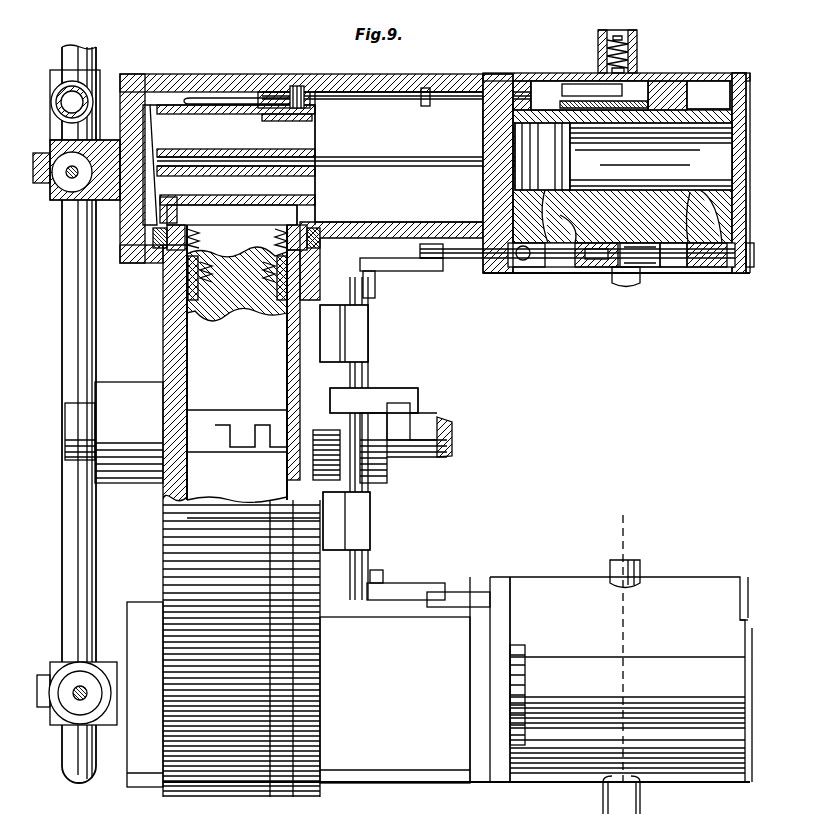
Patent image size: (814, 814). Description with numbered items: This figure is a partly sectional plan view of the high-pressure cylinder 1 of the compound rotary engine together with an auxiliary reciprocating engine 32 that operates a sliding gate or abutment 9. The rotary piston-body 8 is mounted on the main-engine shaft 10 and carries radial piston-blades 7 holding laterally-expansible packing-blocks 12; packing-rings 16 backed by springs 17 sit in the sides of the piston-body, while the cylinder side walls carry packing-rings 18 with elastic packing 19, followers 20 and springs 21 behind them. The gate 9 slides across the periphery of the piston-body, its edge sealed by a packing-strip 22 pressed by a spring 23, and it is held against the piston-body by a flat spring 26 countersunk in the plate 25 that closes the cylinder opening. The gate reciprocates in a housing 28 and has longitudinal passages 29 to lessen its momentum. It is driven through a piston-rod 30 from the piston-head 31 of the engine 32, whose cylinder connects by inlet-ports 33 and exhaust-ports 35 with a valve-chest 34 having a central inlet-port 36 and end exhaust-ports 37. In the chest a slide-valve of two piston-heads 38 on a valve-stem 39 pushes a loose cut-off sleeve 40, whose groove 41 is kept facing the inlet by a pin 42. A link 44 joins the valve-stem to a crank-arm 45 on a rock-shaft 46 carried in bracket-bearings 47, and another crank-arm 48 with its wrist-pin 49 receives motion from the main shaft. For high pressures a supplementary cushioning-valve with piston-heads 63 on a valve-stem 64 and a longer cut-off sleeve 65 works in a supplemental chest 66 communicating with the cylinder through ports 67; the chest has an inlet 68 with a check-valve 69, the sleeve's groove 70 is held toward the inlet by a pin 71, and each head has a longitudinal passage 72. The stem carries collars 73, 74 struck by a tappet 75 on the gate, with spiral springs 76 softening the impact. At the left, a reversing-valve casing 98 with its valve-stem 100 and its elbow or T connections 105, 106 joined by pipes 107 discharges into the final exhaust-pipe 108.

The high-pressure cylinder 1 is at (168, 562).
The radial piston-blade 7 is at (236, 410).
The rotary piston-body 8 is at (237, 362).
The sliding gate or abutment 9 is at (160, 210).
The main-engine shaft 10 is at (455, 455).
The packing-blocks 12 is at (237, 431).
The packing-rings 16 is at (193, 304).
The springs 17 is at (237, 284).
The packing-rings 18 is at (237, 237).
The elastic packing 19 is at (312, 252).
The followers 20 is at (136, 266).
The springs 21 is at (153, 238).
The packing-strip 22 is at (262, 215).
The spring 23 is at (232, 215).
The plate 25 is at (176, 74).
The flat spring 26 is at (205, 98).
The housing 28 is at (412, 437).
The longitudinal passages 29 is at (232, 165).
The piston-rod 30 is at (374, 157).
The piston-head 31 is at (542, 156).
The auxiliary reciprocating engine 32 is at (746, 150).
The inlet-ports 33 is at (483, 209).
The valve-chest 34 is at (730, 268).
The exhaust-ports 35 is at (692, 192).
The inlet-port 36 is at (620, 283).
The exhaust-ports 37 is at (518, 268).
The piston-heads 38 is at (578, 268).
The valve-stem 39 is at (448, 258).
The cut-off sleeve 40 is at (632, 216).
The longitudinal groove 41 is at (672, 268).
The pin 42 is at (648, 268).
The link 44 is at (392, 271).
The crank-arm 45 is at (375, 290).
The rock-shaft 46 is at (370, 378).
The bracket-bearings 47 is at (345, 427).
The crank-arm 48 is at (392, 405).
The wrist-pin 49 is at (412, 428).
The piston-heads 63 is at (487, 110).
The valve-stem 64 is at (372, 100).
The cut-off sleeve 65 is at (612, 150).
The supplemental chamber or chest 66 is at (736, 78).
The ports 67 is at (639, 149).
The inlet 68 is at (617, 33).
The check-valve 69 is at (631, 58).
The longitudinal groove 70 is at (570, 85).
The pin 71 is at (586, 84).
The longitudinal passage 72 is at (518, 81).
The collar 73 is at (425, 106).
The collar 74 is at (287, 126).
The tappet 75 is at (297, 86).
The spiral springs 76 is at (272, 92).
The reversing-valve casing 98 is at (52, 153).
The valve-stem 100 is at (70, 175).
The elbow or T connection 105 is at (88, 783).
The elbow or T connection 106 is at (92, 72).
The pipes 107 is at (62, 104).
The final exhaust-pipe 108 is at (62, 412).